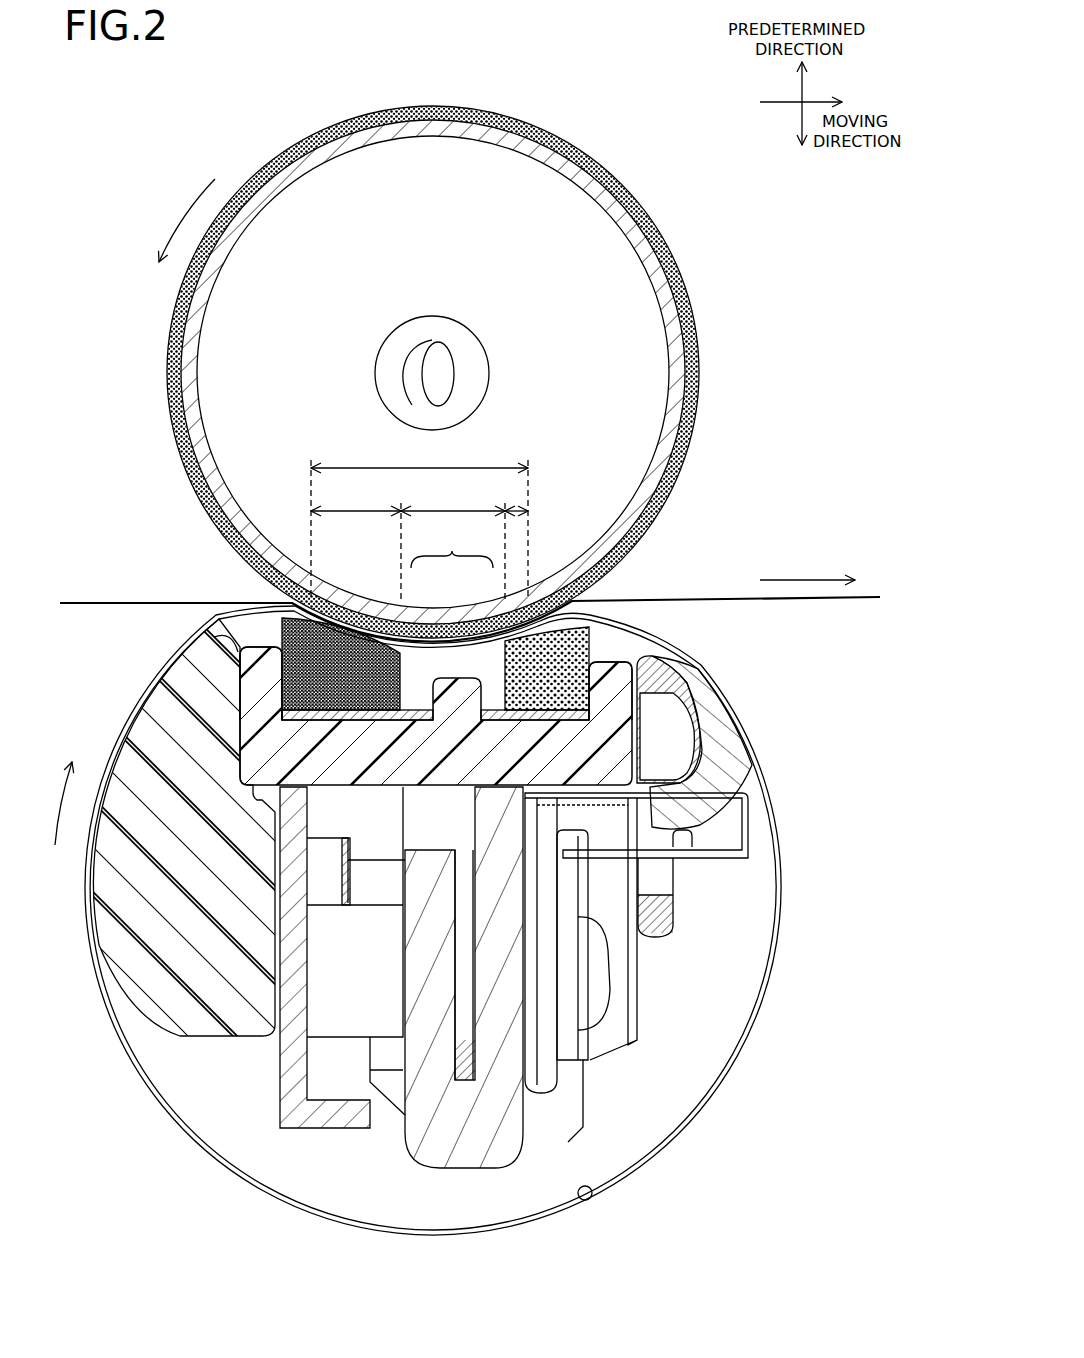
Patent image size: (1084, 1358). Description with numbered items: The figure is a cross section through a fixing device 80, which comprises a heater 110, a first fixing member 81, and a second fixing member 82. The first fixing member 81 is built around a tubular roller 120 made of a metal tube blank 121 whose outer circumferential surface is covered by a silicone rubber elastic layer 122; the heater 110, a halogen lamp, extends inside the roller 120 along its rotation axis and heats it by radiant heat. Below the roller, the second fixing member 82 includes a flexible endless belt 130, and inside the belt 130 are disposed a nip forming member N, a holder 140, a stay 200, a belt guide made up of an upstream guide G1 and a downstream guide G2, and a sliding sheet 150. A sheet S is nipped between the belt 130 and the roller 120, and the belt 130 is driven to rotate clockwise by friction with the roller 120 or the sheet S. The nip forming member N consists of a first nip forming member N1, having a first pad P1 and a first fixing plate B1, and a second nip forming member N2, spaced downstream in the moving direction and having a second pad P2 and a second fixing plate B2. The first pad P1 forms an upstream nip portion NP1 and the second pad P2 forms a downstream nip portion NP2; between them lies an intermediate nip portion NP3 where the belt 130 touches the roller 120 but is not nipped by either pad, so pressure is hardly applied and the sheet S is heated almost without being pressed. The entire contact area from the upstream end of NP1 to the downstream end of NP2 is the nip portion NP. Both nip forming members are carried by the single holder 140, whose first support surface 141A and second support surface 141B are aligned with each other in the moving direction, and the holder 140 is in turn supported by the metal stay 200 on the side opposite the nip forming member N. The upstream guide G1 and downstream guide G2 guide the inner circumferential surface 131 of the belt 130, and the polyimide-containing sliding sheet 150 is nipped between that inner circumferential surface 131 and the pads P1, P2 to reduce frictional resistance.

The fixing device 80 is at (657, 72).
The first fixing member 81 is at (672, 143).
The second fixing member 82 is at (623, 1206).
The roller 120 is at (589, 152).
The tube blank 121 is at (645, 276).
The elastic layer 122 is at (670, 233).
The heater 110 is at (450, 316).
The belt 130 is at (655, 1163).
The inner circumferential surface 131 is at (585, 1200).
The holder 140 is at (252, 636).
The first support surface 141A is at (300, 714).
The second support surface 141B is at (589, 688).
The first fixing plate B1 is at (346, 716).
The second fixing plate B2 is at (591, 716).
The first pad P1 is at (300, 633).
The second pad P2 is at (592, 645).
The upstream guide G1 is at (158, 986).
The downstream guide G2 is at (722, 776).
The sliding sheet 150 is at (752, 826).
The stay 200 is at (350, 1132).
The nip forming member N is at (452, 545).
The first nip forming member N1 is at (410, 668).
The second nip forming member N2 is at (497, 656).
The nip portion NP is at (419, 519).
The upstream nip portion NP1 is at (356, 496).
The downstream nip portion NP2 is at (542, 496).
The intermediate nip portion NP3 is at (453, 496).
The sheet S is at (740, 598).